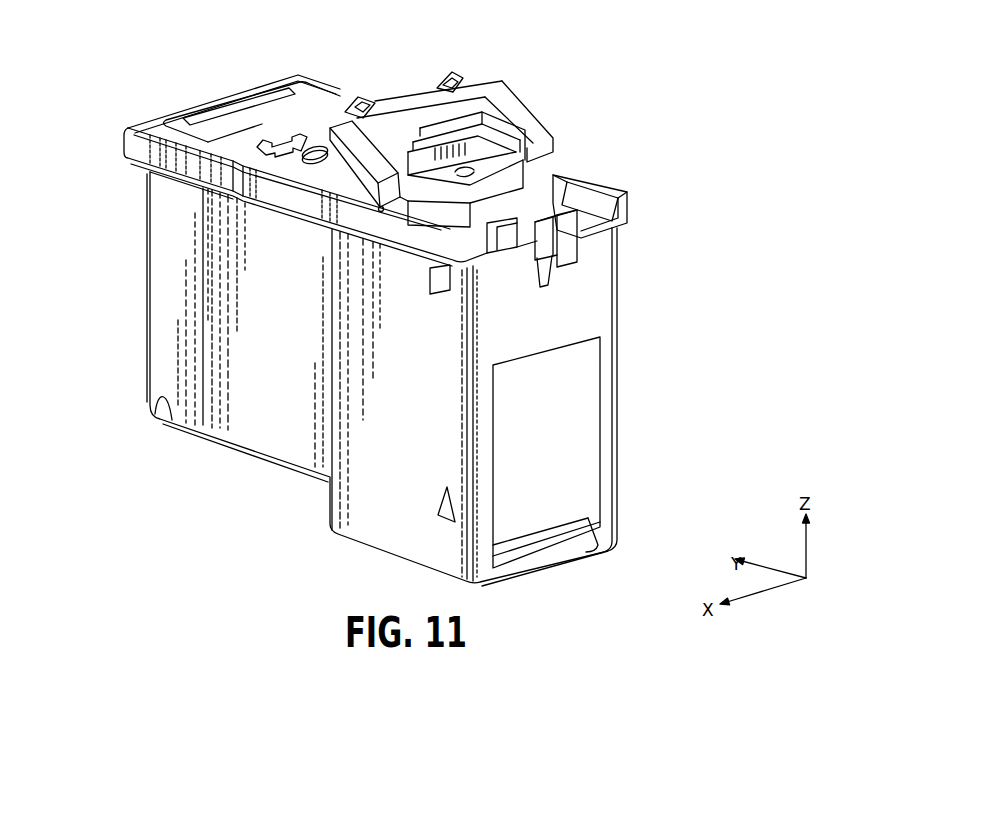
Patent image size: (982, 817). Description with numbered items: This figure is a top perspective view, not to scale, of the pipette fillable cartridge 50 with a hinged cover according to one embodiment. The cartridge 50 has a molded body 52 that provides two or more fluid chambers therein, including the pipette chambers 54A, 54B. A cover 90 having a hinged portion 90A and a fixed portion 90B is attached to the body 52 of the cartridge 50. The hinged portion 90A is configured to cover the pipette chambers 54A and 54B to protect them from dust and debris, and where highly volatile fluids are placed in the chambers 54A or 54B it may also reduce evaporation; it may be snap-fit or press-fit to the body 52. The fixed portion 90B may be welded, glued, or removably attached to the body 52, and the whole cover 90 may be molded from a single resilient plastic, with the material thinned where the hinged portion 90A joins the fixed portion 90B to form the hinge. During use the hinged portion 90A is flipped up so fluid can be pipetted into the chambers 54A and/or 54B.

The cartridge 50 is at (379, 303).
The molded body 52 is at (603, 400).
The fluid chamber 54A is at (555, 198).
The fluid chamber 54B is at (448, 235).
The cover 90 is at (332, 146).
The hinged portion 90A is at (500, 97).
The fixed portion 90B is at (234, 162).